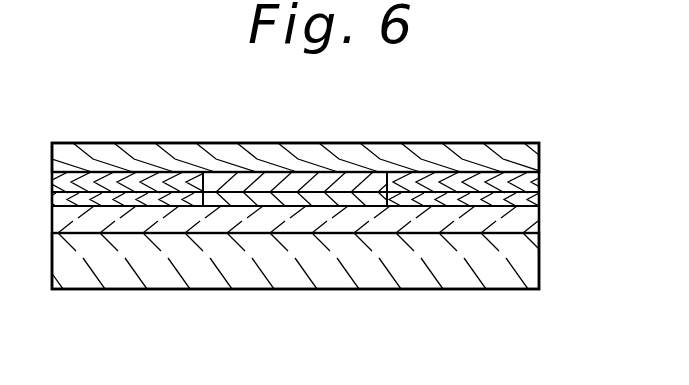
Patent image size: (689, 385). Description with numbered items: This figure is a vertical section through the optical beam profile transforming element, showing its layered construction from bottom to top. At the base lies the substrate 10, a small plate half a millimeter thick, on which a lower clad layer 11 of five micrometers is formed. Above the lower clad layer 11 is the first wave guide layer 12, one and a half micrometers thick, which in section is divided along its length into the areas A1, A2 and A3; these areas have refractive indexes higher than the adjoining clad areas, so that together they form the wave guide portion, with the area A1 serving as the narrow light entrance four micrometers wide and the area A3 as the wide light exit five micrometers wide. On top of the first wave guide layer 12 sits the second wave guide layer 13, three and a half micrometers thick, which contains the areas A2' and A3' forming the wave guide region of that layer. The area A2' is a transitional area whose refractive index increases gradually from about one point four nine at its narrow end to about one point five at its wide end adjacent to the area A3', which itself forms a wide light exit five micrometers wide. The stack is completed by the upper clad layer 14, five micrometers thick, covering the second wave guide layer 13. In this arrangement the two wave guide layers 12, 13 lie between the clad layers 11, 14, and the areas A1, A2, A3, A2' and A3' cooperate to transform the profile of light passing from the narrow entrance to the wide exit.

The substrate 10 is at (535, 273).
The lower clad layer 11 is at (535, 231).
The first wave guide layer 12 is at (534, 198).
The second wave guide layer 13 is at (534, 176).
The upper clad layer 14 is at (534, 157).
The narrow light entrance area A1 is at (139, 200).
The area of the first wave guide layer A2 is at (295, 257).
The wide light exit area A3 is at (461, 271).
The transitional area A2' is at (285, 133).
The wide light exit area of the second wave guide layer A3' is at (465, 131).